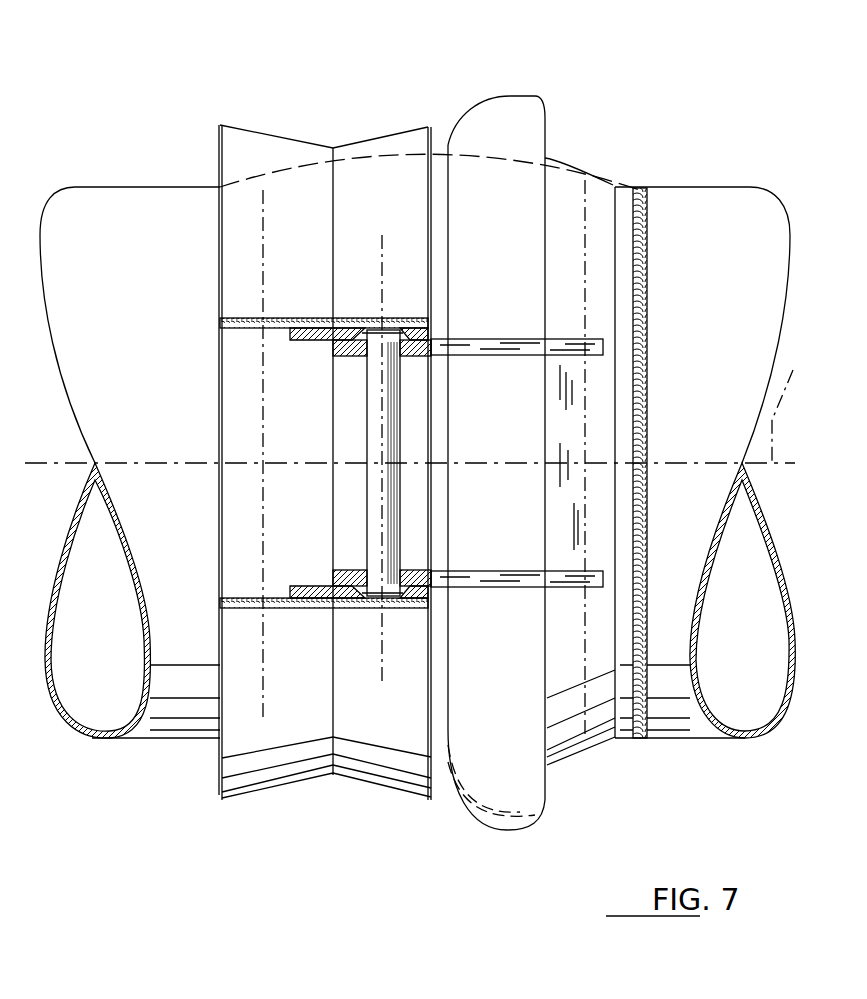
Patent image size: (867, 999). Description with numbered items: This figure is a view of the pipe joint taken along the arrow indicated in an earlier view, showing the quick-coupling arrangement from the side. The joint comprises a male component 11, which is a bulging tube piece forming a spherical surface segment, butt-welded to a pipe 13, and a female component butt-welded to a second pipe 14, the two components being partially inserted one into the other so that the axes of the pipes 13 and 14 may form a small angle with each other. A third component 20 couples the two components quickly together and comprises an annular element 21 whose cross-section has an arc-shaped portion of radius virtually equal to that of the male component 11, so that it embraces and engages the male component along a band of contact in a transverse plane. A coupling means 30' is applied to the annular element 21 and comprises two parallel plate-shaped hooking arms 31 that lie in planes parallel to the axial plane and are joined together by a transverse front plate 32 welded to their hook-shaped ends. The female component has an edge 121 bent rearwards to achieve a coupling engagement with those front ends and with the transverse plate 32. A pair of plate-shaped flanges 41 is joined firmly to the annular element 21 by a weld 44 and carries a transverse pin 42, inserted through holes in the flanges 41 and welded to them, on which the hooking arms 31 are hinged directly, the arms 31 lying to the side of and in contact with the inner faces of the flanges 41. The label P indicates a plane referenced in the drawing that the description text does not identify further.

The male component 11 is at (385, 152).
The pipe 13 is at (125, 187).
The pipe 14 is at (705, 187).
The third component 20 is at (430, 122).
The annular element 21 is at (270, 135).
The coupling means 30' is at (608, 436).
The hooking arm 31 is at (470, 339).
The transverse front plate 32 is at (580, 447).
The flange 41 is at (333, 338).
The transverse pin 42 is at (375, 512).
The weld 44 is at (278, 318).
The edge 121 is at (453, 762).
The parting plane P is at (791, 402).